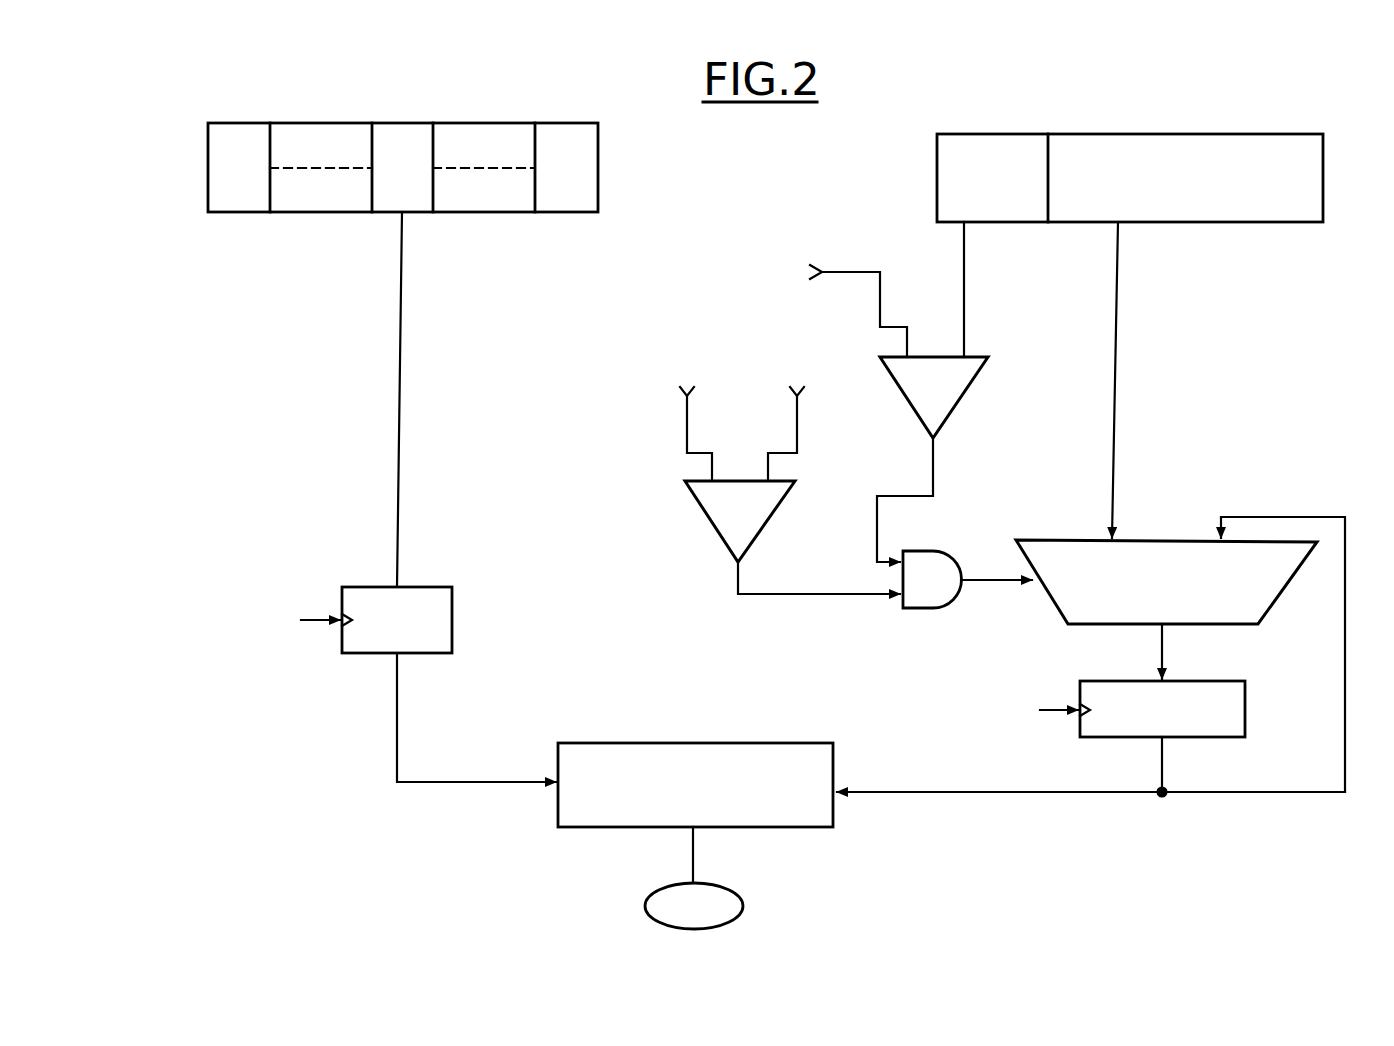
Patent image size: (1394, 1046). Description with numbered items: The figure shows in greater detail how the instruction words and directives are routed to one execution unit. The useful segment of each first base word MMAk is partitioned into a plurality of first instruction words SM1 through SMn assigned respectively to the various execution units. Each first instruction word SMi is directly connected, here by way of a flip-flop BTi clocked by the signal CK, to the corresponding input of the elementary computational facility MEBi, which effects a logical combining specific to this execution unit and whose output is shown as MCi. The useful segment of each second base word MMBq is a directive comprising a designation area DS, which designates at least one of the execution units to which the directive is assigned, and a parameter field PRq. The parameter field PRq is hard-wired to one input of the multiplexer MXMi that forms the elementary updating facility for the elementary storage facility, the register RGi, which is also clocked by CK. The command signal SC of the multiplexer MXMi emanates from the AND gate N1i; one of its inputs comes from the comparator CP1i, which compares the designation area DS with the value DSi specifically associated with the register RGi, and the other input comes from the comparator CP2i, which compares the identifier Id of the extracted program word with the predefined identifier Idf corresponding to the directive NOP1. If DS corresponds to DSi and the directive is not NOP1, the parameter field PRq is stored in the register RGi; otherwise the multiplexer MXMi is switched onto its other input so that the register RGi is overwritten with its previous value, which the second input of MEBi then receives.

The first base word MMAk is at (305, 121).
The first instruction word SM1 is at (239, 167).
The first instruction word SMi is at (478, 826).
The first instruction word SMn is at (566, 167).
The second base word MMBq is at (1136, 131).
The designation area DS is at (992, 245).
The parameter field PRq is at (1185, 336).
The value specifically associated with the register DSi is at (833, 307).
The identifier input Id is at (694, 418).
The predefined identifier Idf is at (791, 418).
The comparator CP1i is at (953, 418).
The comparator CP2i is at (717, 530).
The AND logic gate N1i is at (928, 608).
The command signal SC is at (1000, 580).
The multiplexer MXMi is at (1091, 657).
The elementary storage facility RGi is at (1245, 712).
The clock signal CK is at (670, 664).
The flip-flop BTi is at (452, 622).
The elementary computational facility MEBi is at (695, 813).
The memory control output MCi is at (694, 906).